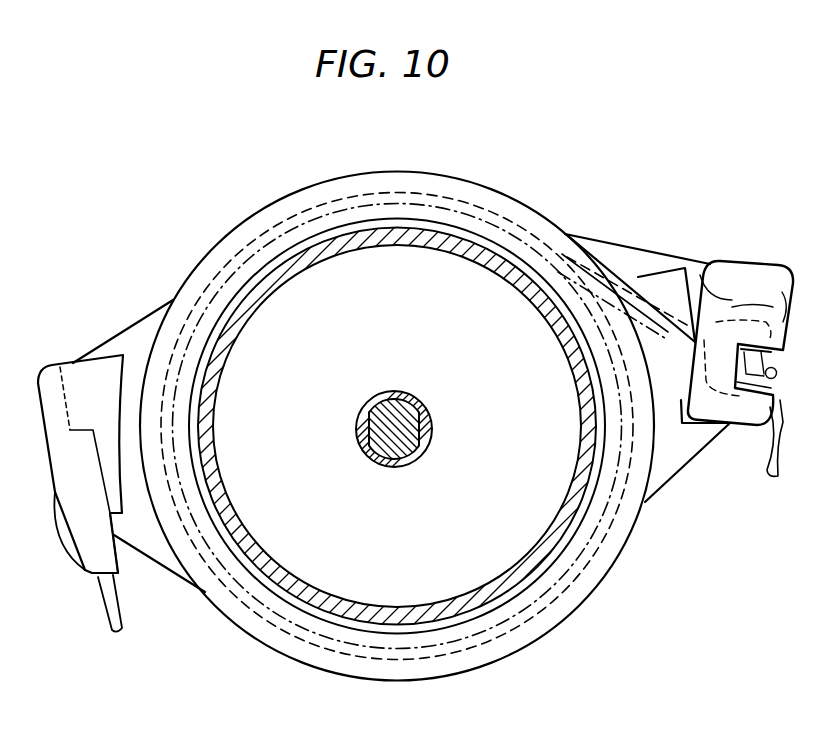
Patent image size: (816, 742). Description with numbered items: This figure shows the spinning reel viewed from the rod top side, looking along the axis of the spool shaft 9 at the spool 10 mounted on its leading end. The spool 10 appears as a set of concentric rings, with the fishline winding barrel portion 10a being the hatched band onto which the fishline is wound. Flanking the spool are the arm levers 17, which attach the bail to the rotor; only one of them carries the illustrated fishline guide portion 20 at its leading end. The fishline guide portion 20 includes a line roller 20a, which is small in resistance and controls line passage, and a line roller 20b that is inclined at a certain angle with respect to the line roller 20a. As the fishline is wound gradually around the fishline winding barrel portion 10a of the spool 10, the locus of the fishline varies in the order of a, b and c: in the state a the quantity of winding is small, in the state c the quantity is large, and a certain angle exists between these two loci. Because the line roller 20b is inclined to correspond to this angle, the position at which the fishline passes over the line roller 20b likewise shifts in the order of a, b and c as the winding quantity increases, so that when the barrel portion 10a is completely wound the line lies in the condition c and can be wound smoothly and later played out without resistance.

The spool shaft 9 is at (412, 416).
The spool 10 is at (153, 308).
The fishline winding barrel portion 10a is at (303, 257).
The arm lever 17 is at (103, 372).
The fishline guide portion 20 is at (699, 203).
The line roller 20a is at (747, 382).
The line roller 20b is at (710, 385).
The fishline locus state a is at (708, 313).
The fishline locus state b is at (623, 293).
The fishline locus state c is at (577, 245).